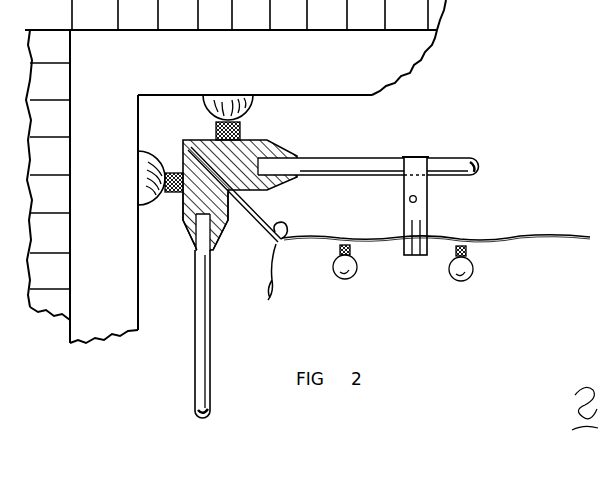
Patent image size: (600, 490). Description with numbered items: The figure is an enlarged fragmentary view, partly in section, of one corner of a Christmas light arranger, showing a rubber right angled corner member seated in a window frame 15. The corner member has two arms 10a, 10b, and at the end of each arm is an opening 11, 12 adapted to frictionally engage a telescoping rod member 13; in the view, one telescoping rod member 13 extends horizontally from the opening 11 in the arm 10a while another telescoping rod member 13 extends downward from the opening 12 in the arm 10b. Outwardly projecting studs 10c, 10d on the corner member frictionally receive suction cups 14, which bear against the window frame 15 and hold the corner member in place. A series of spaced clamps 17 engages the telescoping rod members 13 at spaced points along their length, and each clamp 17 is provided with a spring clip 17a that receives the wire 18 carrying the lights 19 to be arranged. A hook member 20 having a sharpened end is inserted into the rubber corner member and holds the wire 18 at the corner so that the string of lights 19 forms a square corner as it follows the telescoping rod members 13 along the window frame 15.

The window frame 15 is at (131, 68).
The suction cup 14 is at (215, 97).
The arm 10a is at (258, 142).
The arm 10b is at (182, 223).
The stud 10c is at (215, 128).
The stud 10d is at (181, 172).
The opening 11 is at (298, 158).
The opening 12 is at (222, 241).
The telescoping rod member 13 is at (343, 160).
The clamp 17 is at (431, 208).
The spring clip 17a is at (425, 257).
The wire 18 is at (298, 241).
The light 19 is at (353, 277).
The hook member 20 is at (257, 212).